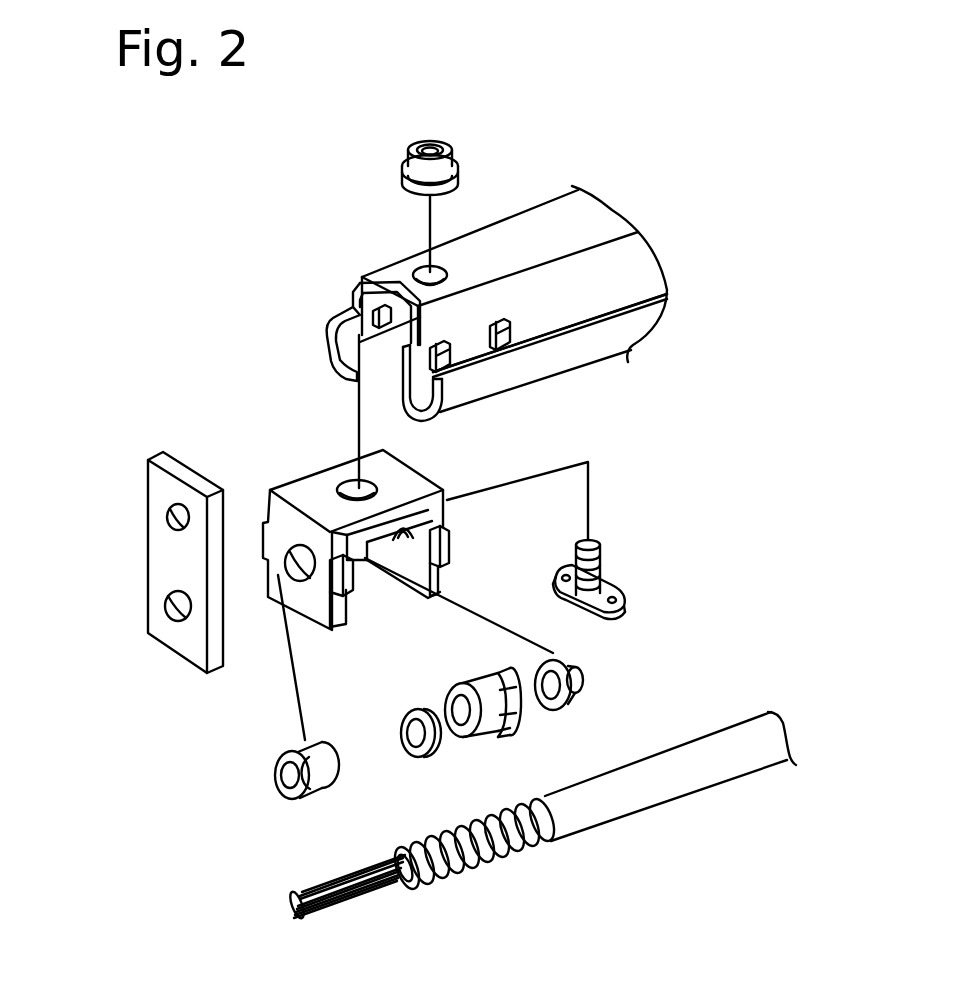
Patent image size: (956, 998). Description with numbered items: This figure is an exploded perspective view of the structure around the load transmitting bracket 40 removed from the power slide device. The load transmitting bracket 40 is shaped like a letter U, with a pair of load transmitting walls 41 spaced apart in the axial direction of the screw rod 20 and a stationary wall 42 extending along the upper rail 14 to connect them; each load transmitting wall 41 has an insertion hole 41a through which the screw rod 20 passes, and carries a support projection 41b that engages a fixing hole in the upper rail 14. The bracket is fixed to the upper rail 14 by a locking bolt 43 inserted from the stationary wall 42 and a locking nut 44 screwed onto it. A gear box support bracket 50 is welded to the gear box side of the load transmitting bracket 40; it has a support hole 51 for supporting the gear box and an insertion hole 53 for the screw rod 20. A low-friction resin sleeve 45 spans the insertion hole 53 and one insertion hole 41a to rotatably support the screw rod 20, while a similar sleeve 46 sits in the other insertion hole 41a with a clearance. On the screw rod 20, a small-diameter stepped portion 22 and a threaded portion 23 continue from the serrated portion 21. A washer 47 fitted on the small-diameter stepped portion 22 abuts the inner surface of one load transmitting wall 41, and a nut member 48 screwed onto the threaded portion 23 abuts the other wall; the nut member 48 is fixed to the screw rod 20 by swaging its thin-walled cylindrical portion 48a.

The upper rail 14 is at (630, 270).
The locking nut 44 is at (457, 157).
The load transmitting bracket 40 is at (266, 466).
The stationary wall 42 is at (410, 569).
The load transmitting walls 41 is at (393, 567).
The insertion holes 41a is at (450, 507).
The support projections 41b is at (450, 550).
The locking bolt 43 is at (625, 590).
The sleeve 46 is at (584, 680).
The washer 47 is at (398, 722).
The nut member 48 is at (455, 710).
The thin-walled cylindrical portion 48a is at (466, 728).
The sleeve 45 is at (284, 796).
The gear box support bracket 50 is at (146, 581).
The support hole 51 is at (169, 516).
The insertion hole 53 is at (170, 620).
The screw rod 20 is at (543, 841).
The serrated portion 21 is at (340, 905).
The small-diameter stepped portion 22 is at (392, 880).
The threaded portion 23 is at (584, 816).